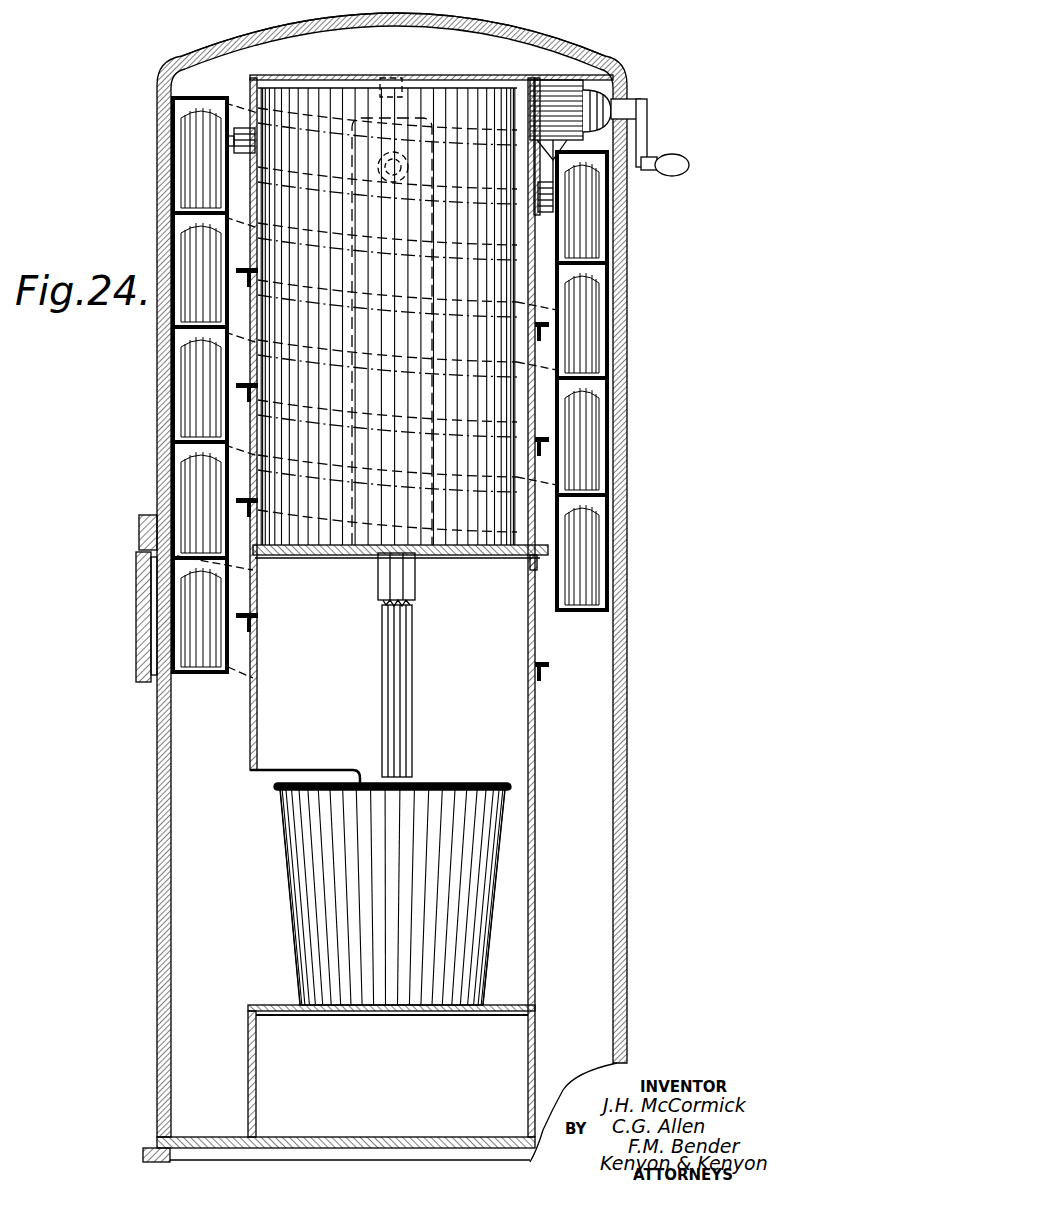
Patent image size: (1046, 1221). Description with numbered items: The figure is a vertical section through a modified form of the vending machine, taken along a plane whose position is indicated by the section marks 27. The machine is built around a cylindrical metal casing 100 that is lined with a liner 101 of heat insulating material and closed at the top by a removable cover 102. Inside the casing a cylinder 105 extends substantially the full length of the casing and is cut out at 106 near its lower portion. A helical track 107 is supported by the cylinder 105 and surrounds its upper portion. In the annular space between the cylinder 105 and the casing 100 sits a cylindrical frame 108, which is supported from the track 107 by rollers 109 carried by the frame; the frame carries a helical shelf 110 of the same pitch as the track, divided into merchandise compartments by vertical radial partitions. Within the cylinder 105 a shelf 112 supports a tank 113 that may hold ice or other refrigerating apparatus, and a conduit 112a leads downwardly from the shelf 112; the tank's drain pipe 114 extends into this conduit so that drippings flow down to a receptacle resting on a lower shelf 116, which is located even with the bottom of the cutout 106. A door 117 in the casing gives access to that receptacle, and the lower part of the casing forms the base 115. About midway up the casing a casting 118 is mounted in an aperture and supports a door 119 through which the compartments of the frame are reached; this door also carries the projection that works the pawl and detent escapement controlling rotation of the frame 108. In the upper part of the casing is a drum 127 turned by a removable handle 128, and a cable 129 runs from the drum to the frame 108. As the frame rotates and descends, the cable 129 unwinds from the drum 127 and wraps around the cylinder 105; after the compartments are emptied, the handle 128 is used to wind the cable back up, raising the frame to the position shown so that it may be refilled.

The section line 27 is at (128, 668).
The cylindrical metal casing 100 is at (627, 546).
The liner 101 is at (627, 663).
The cover 102 is at (627, 58).
The cylinder 105 is at (605, 112).
The cutout 106 is at (268, 770).
The helical track 107 is at (543, 663).
The cylindrical frame 108 is at (607, 158).
The rollers 109 is at (235, 152).
The helical shelf 110 is at (575, 262).
The shelf 112 is at (517, 543).
The conduit 112a is at (410, 724).
The tank 113 is at (278, 95).
The drain pipe 114 is at (403, 568).
The base 115 is at (512, 1005).
The shelf 116 is at (480, 887).
The door 117 is at (155, 978).
The casting 118 is at (150, 515).
The door 119 is at (140, 541).
The drum 127 is at (580, 82).
The removable handle 128 is at (647, 130).
The cable 129 is at (536, 80).